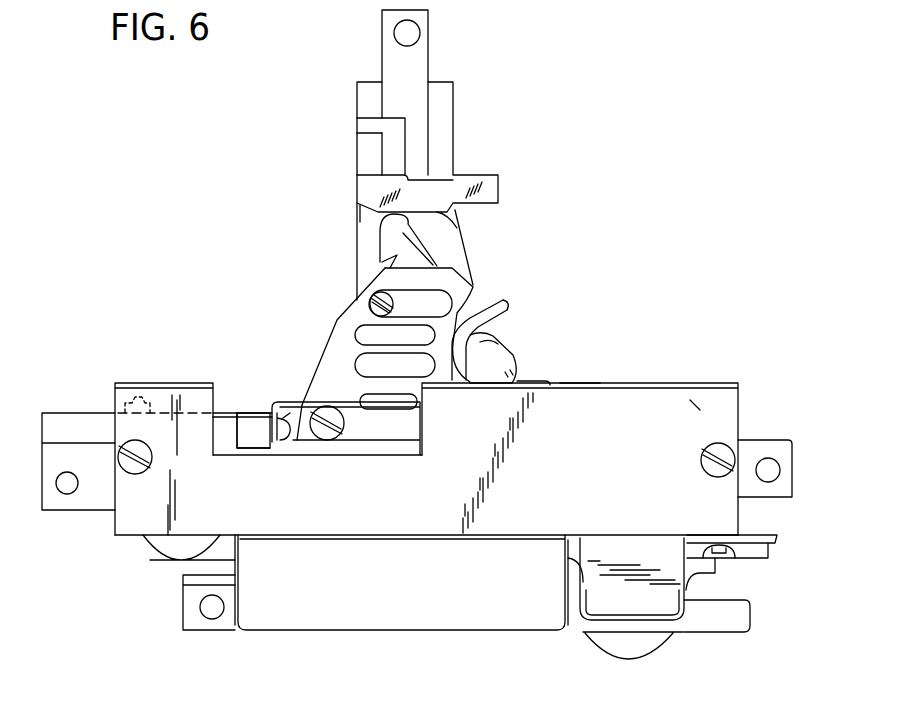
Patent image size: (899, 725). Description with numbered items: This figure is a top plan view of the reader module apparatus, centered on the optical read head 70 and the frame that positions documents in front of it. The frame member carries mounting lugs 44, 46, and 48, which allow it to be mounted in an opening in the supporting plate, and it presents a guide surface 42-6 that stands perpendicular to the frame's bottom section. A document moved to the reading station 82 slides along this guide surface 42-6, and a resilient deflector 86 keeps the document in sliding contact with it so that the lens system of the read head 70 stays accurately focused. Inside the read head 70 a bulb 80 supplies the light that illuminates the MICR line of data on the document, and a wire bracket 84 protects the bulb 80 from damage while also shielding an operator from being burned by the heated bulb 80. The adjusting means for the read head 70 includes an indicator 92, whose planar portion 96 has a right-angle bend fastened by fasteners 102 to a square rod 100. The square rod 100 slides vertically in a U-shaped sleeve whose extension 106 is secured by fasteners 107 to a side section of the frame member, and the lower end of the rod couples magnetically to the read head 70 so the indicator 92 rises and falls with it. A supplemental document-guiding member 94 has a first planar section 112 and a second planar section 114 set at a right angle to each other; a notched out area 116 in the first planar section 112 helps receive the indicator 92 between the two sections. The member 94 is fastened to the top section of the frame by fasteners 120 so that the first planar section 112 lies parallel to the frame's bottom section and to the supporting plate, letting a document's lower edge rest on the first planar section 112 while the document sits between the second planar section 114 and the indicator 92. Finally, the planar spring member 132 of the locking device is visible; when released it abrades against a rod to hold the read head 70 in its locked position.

The mounting lug 48 is at (417, 55).
The guide surface 42-6 is at (453, 230).
The reading station 82 is at (368, 216).
The resilient deflector 86 is at (378, 240).
The indicator 92 is at (323, 398).
The wire bracket 84 is at (500, 303).
The bulb 80 is at (493, 362).
The extension 106 is at (227, 412).
The fasteners 107 is at (147, 395).
The fasteners 120 is at (130, 445).
The mounting lug 44 is at (70, 503).
The notched out area 116 is at (213, 438).
The square rod 100 is at (255, 435).
The fasteners 102 is at (283, 425).
The planar portion 96 is at (352, 403).
The supplemental document-guiding member 94 is at (628, 413).
The second planar section 114 is at (580, 383).
The first planar section 112 is at (695, 407).
The mounting lug 46 is at (757, 438).
The read head 70 is at (458, 598).
The planar spring member 132 is at (647, 602).